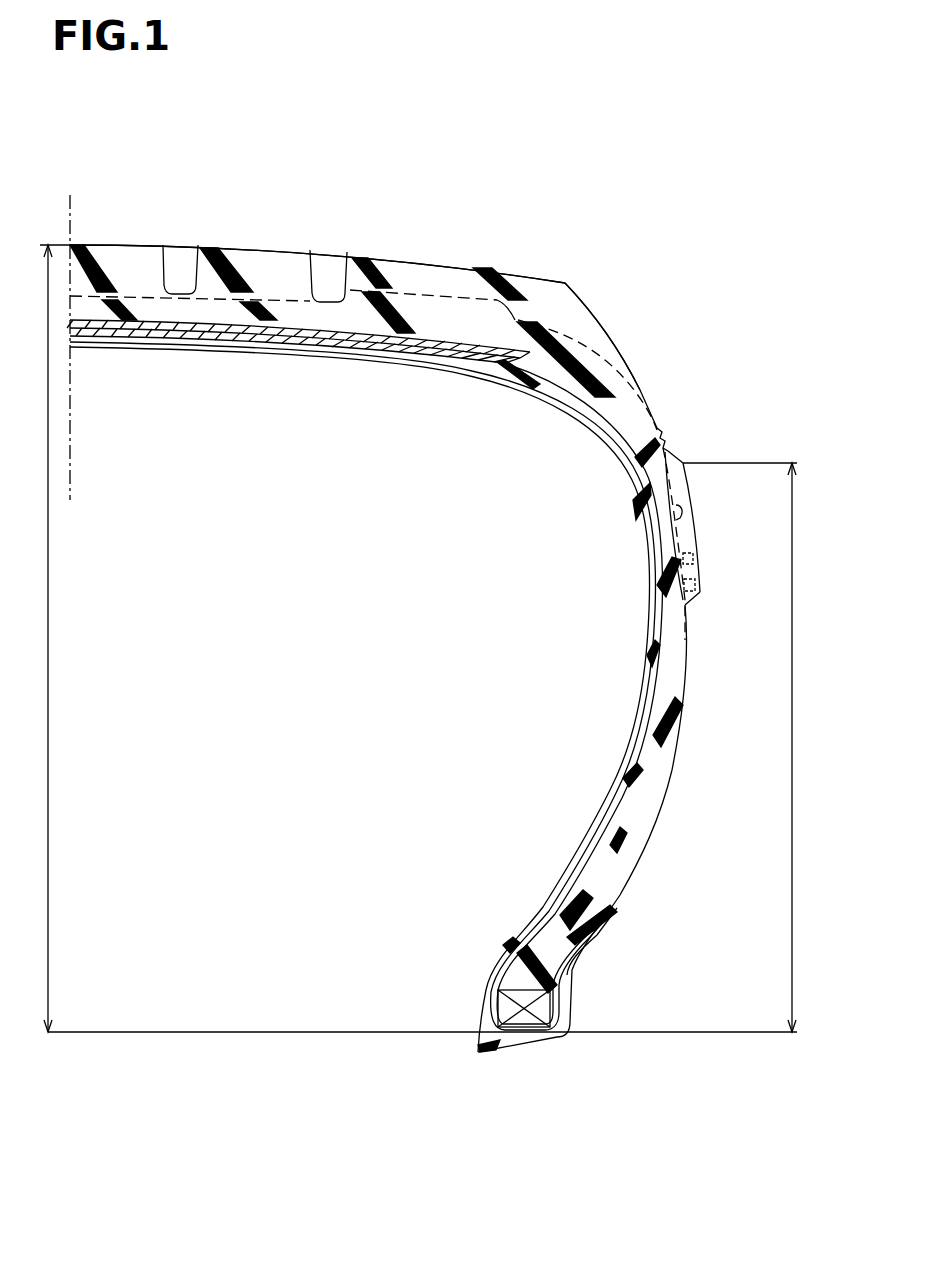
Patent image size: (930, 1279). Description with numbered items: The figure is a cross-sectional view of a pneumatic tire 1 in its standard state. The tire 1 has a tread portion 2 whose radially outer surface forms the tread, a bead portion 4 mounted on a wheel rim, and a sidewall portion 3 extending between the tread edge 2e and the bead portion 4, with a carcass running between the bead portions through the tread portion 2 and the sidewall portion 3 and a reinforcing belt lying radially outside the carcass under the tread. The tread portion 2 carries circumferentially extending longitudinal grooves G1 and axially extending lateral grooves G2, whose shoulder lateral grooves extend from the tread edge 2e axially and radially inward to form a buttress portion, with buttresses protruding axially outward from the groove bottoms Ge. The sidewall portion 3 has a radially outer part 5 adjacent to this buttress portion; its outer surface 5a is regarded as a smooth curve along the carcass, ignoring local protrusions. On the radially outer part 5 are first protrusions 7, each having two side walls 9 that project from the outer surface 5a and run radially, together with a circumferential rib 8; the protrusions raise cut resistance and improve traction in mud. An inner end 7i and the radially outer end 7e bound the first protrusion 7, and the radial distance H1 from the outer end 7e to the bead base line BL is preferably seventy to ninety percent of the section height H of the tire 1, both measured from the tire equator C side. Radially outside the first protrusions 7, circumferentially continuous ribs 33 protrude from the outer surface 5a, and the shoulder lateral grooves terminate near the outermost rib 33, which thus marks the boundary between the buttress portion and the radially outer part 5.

The pneumatic tire 1 is at (545, 212).
The tread portion 2 is at (450, 262).
The tread edge 2e is at (566, 284).
The sidewall portion 3 is at (688, 690).
The bead portion 4 is at (587, 1020).
The radially outer part 5 is at (728, 383).
The outer surface 5a is at (675, 520).
The first protrusion 7 is at (691, 490).
The radially outer end of first protrusion 7e is at (683, 463).
The inner edge of protrusion 7i is at (699, 597).
The circumferential rib 8 is at (695, 558).
The side wall 9 is at (687, 532).
The circumferentially continuous rib 33 is at (658, 428).
The longitudinal groove G1 is at (180, 277).
The lateral groove G2 is at (400, 278).
The groove bottom Ge is at (575, 332).
The tire equator C is at (69, 331).
The section height H is at (54, 638).
The radial distance H1 is at (749, 747).
The base line BL is at (262, 1032).